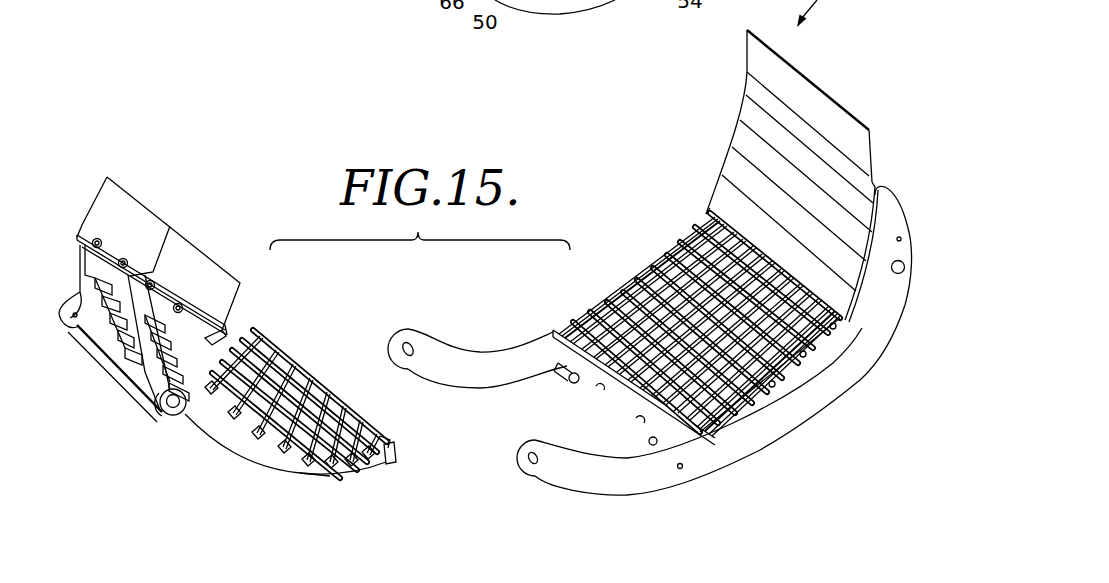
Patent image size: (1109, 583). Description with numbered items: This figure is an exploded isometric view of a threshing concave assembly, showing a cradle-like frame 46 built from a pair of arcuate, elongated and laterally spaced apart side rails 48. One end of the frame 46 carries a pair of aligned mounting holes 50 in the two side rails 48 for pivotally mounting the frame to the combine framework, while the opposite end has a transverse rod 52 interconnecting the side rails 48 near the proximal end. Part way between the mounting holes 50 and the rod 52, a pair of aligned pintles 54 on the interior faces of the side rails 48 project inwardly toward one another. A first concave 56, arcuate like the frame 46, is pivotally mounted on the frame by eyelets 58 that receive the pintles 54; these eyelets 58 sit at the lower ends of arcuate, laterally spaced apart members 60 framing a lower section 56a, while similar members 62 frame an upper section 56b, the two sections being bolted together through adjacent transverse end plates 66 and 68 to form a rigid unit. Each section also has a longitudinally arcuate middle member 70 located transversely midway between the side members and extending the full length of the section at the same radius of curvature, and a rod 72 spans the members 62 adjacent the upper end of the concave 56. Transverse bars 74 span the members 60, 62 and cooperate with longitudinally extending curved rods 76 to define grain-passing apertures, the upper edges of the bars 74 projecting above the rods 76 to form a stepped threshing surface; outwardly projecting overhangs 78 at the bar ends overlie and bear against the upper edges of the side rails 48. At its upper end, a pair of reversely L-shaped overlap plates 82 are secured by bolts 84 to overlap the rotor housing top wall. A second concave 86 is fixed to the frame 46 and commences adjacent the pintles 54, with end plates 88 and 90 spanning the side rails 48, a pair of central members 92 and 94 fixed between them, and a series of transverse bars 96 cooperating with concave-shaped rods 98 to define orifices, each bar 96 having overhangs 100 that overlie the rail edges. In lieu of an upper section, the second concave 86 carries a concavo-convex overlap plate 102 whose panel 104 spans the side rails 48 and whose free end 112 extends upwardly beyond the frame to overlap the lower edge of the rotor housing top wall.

The frame 46 is at (852, 380).
The side rails 48 is at (512, 346).
The mounting holes 50 is at (413, 344).
The transverse rod 52 is at (898, 275).
The pintles 54 is at (565, 378).
The first concave 56 is at (135, 413).
The lower section 56a is at (288, 485).
The upper section 56b is at (156, 428).
The eyelets 58 is at (386, 464).
The members 60 is at (323, 470).
The members 62 is at (78, 293).
The end plate 66 is at (230, 445).
The end plate 68 is at (205, 430).
The support member 70 is at (127, 392).
The rod 72 is at (108, 353).
The transverse bars 74 is at (112, 305).
The curved rods 76 is at (240, 333).
The overhangs 78 is at (388, 443).
The overlap plates 82 is at (126, 198).
The bolts 84 is at (97, 238).
The second concave 86 is at (652, 255).
The end plate 88 is at (553, 333).
The end plate 90 is at (706, 212).
The central member 92 is at (605, 308).
The central member 94 is at (706, 432).
The transverse bars 96 is at (806, 352).
The concave-shaped rods 98 is at (680, 240).
The overhangs 100 is at (585, 328).
The overlap plate 102 is at (871, 118).
The panel 104 is at (752, 128).
The free end 112 is at (752, 58).